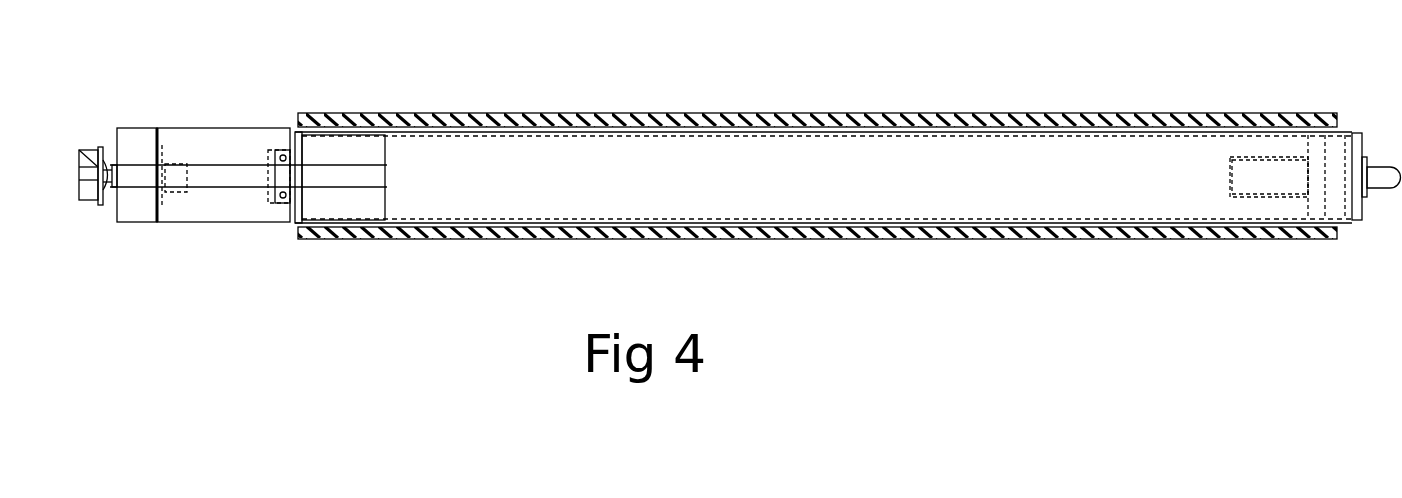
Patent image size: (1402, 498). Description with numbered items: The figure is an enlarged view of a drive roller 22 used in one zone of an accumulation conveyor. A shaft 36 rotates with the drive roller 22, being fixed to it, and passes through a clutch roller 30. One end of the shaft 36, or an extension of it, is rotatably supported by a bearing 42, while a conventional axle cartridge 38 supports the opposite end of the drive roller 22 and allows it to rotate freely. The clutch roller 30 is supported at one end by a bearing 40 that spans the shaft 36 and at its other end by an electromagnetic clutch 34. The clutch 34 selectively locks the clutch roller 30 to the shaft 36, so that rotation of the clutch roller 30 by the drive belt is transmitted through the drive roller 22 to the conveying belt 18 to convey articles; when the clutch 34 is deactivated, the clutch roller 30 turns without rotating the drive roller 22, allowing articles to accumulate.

The conveying belt 18 is at (1053, 115).
The drive roller 22 is at (690, 132).
The clutch roller 30 is at (232, 130).
The electromagnetic clutch 34 is at (132, 222).
The shaft 36 is at (353, 165).
The axle cartridge 38 is at (1310, 147).
The bearing 40 is at (282, 150).
The bearing 42 is at (92, 150).